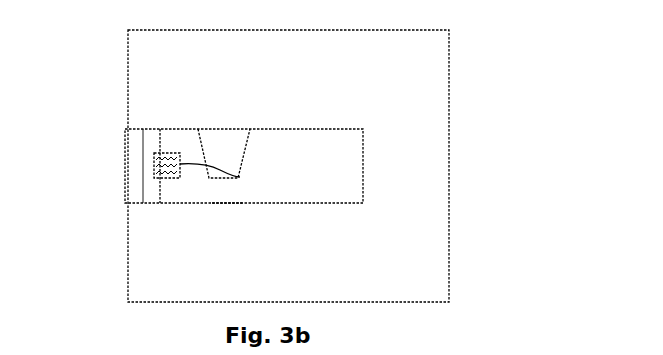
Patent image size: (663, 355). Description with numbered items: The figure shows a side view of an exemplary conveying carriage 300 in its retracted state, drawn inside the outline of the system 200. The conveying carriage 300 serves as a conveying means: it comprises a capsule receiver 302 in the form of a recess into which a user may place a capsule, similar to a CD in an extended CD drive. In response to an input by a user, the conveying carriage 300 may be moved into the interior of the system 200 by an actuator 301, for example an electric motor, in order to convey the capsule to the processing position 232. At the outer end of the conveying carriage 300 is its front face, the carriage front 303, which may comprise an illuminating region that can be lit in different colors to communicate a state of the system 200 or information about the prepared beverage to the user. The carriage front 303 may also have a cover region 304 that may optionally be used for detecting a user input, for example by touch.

The system 200 is at (449, 153).
The conveying carriage 300 is at (173, 207).
The cover region 304 is at (125, 160).
The carriage front 303 is at (155, 128).
The capsule receiver 302 is at (212, 128).
The actuator 301 is at (240, 177).
The processing position 232 is at (227, 204).